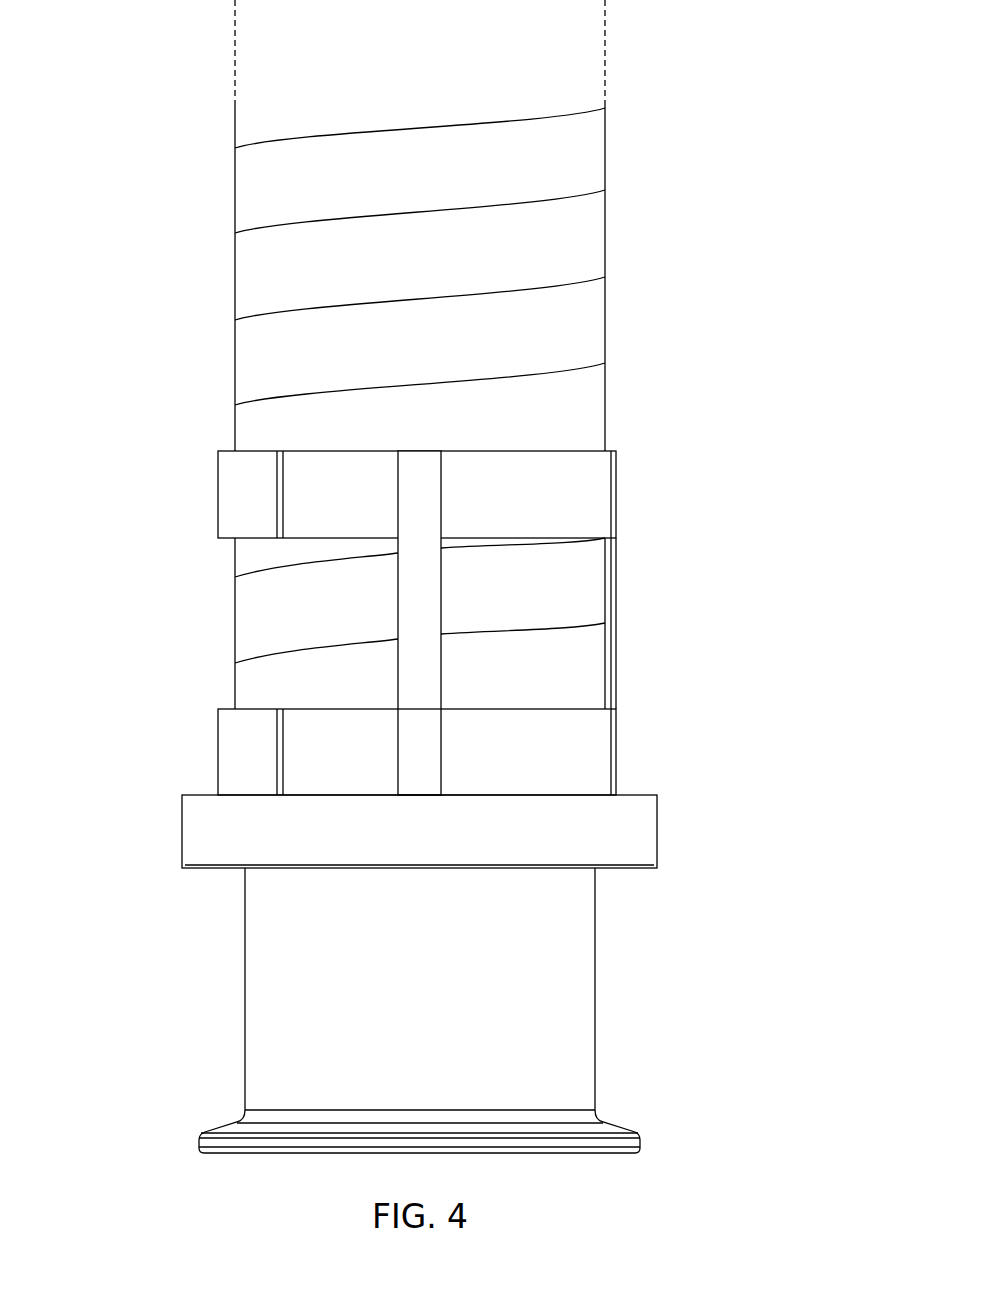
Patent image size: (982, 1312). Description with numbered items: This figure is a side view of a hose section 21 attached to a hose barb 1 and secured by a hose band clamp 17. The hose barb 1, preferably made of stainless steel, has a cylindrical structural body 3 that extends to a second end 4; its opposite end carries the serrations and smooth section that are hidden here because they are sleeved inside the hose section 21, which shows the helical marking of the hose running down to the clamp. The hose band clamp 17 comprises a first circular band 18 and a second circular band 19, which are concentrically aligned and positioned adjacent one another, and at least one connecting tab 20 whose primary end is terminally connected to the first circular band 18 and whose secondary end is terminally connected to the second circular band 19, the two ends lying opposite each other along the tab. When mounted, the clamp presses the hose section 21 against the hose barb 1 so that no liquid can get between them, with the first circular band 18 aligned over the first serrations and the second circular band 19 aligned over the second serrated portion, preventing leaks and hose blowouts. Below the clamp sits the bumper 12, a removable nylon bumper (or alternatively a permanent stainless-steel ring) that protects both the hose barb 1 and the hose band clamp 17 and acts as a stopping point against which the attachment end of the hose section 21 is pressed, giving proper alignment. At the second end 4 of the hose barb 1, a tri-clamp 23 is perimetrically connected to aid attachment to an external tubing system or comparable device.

The hose barb 1 is at (692, 943).
The structural body 3 is at (263, 937).
The second end 4 is at (618, 1155).
The bumper 12 is at (193, 807).
The hose band clamp 17 is at (637, 663).
The first circular band 18 is at (597, 493).
The second circular band 19 is at (593, 740).
The connecting tab 20 is at (410, 602).
The hose section 21 is at (640, 228).
The tri-clamp 23 is at (222, 1106).